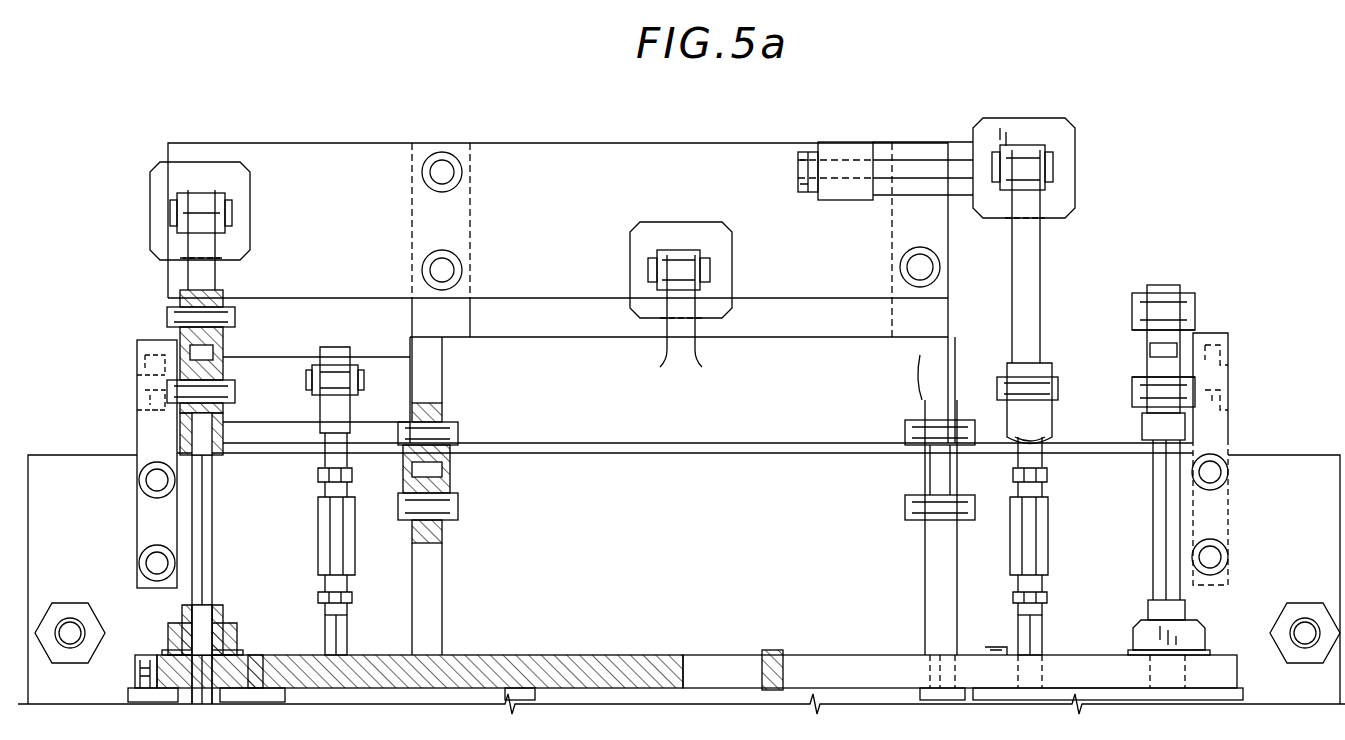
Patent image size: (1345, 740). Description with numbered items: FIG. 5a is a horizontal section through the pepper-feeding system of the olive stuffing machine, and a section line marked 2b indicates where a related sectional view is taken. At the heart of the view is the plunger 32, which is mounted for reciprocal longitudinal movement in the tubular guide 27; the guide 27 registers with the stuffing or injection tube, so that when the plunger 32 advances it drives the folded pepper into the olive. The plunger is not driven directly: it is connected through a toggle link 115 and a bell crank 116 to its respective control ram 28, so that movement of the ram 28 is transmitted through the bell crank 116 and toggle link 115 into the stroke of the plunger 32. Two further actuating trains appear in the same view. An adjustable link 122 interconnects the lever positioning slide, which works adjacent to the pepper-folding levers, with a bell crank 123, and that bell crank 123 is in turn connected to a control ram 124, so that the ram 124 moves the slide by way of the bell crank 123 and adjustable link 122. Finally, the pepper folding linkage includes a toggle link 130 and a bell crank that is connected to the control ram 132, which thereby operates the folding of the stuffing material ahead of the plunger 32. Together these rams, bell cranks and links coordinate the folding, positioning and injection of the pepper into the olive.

The ram 28 is at (240, 241).
The bell crank 116 is at (223, 350).
The bell crank 123 is at (333, 352).
The toggle link 130 is at (450, 479).
The adjustable link 122 is at (356, 561).
The plunger 32 is at (205, 572).
The control ram 132 is at (690, 230).
The control ram 124 is at (1068, 188).
The toggle link 115 is at (1147, 358).
The guide 27 is at (1178, 612).
The section line 2b is at (282, 190).